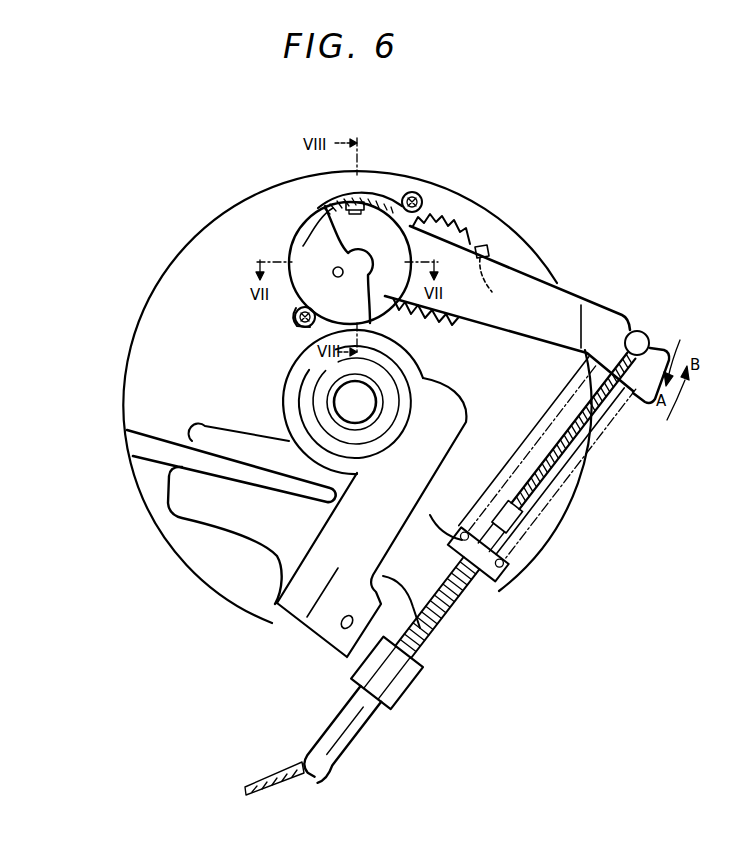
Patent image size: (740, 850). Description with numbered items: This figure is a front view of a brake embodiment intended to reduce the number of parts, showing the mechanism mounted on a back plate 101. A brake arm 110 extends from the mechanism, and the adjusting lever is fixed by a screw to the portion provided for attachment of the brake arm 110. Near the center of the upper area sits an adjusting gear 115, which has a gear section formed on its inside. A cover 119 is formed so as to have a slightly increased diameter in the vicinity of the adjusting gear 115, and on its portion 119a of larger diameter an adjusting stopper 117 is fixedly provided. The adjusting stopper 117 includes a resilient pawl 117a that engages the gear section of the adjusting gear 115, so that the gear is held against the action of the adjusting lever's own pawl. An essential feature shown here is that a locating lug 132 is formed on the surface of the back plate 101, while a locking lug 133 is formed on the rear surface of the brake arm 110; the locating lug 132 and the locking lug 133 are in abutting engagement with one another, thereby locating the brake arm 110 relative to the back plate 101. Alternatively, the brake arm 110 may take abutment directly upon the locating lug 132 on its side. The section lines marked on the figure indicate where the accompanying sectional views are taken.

The back plate 101 is at (510, 260).
The brake arm 110 is at (543, 313).
The adjusting gear 115 is at (337, 227).
The adjusting stopper 117 is at (348, 195).
The resilient pawl 117a is at (305, 243).
The cover 119 is at (320, 282).
The portion of larger diameter 119a is at (377, 197).
The locating lug 132 is at (482, 247).
The locking lug 133 is at (499, 283).